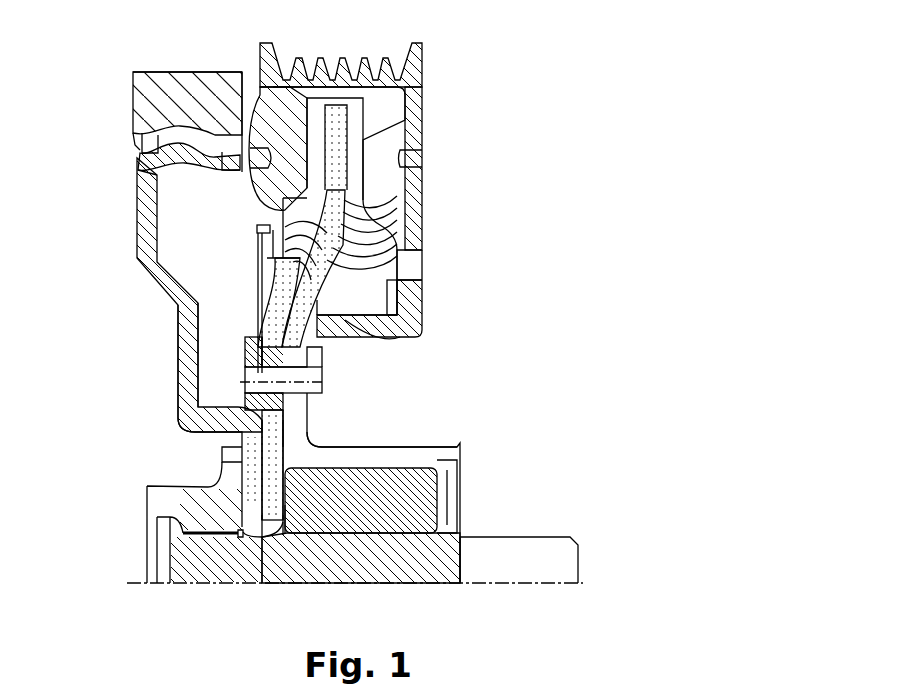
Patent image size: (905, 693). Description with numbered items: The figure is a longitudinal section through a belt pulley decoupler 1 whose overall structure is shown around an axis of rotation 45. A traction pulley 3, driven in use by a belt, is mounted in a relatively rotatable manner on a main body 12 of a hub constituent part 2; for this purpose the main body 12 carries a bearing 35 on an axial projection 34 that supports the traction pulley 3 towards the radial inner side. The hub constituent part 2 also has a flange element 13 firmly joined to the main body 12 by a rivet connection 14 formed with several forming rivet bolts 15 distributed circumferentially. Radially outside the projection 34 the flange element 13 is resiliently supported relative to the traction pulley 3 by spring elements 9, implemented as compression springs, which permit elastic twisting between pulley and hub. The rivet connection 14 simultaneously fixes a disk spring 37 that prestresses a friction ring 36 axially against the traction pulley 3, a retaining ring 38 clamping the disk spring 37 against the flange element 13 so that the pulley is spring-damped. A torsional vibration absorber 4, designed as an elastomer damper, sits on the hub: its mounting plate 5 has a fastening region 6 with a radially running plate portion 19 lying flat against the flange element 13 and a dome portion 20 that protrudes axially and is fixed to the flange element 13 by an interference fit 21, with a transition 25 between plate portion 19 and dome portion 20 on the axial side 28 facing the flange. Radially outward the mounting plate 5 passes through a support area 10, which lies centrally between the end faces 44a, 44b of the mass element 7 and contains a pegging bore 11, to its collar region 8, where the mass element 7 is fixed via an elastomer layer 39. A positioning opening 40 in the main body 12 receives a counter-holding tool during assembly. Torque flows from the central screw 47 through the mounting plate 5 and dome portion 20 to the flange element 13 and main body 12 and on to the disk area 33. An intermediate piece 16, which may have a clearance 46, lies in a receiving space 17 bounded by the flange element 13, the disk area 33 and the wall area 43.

The belt pulley decoupler 1 is at (473, 52).
The hub constituent part 2 is at (310, 348).
The traction pulley 3 is at (425, 110).
The torsional vibration absorber 4 is at (121, 55).
The mounting plate 5 is at (137, 255).
The fastening region 6 is at (238, 472).
The mass element 7 is at (197, 75).
The collar region 8 is at (142, 168).
The spring elements 9 is at (400, 238).
The support area 10 is at (178, 350).
The pegging bore 11 is at (178, 388).
The main body 12 is at (338, 434).
The flange element 13 is at (315, 405).
The rivet connection 14 is at (330, 368).
The rivet bolt 15 is at (240, 362).
The intermediate piece 16 is at (445, 492).
The receiving space 17 is at (468, 450).
The plate portion 19 is at (222, 462).
The dome portion 20 is at (266, 545).
The interference fit 21 is at (281, 550).
The transition 25 is at (246, 540).
The axial side 28 is at (332, 562).
The disk area 33 is at (458, 515).
The axial projection 34 is at (372, 340).
The bearing 35 is at (400, 305).
The friction ring 36 is at (257, 230).
The disk spring 37 is at (258, 268).
The retaining ring 38 is at (252, 340).
The elastomer layer 39 is at (140, 150).
The positioning opening 40 is at (425, 262).
The wall area 43 is at (422, 448).
The end face 44a is at (135, 100).
The end face 44b is at (244, 95).
The axis of rotation 45 is at (140, 586).
The clearance 46 is at (302, 552).
The central screw 47 is at (198, 557).